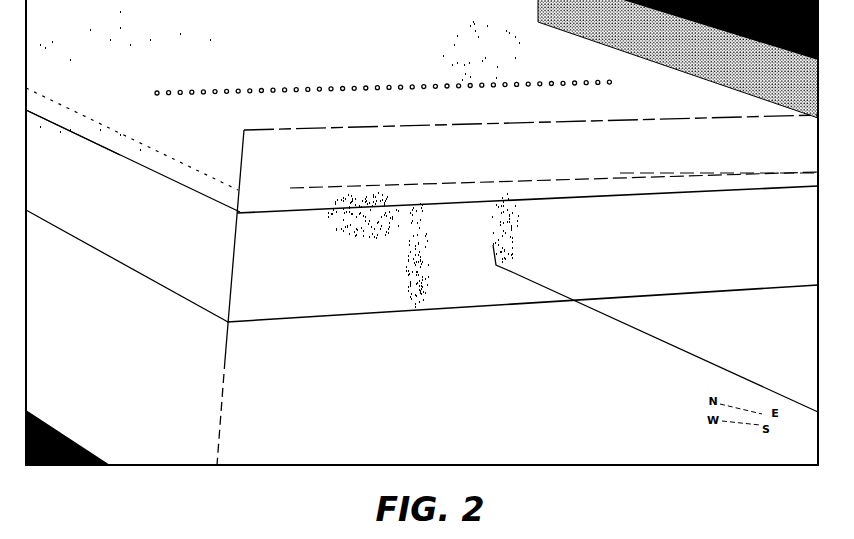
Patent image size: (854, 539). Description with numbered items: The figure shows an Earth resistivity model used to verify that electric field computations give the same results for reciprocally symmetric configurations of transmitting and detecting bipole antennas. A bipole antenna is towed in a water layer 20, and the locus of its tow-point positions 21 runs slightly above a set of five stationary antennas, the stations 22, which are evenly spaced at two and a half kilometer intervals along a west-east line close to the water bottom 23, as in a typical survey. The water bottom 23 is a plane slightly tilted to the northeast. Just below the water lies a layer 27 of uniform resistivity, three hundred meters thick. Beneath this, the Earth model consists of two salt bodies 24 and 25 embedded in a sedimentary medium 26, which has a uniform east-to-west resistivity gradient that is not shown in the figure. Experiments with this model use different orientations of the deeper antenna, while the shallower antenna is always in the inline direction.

The water layer 20 is at (752, 124).
The locus of tow-point positions 21 is at (432, 82).
The stations 22 is at (297, 100).
The water bottom 23 is at (140, 145).
The salt body 24 is at (404, 228).
The salt body 25 is at (510, 222).
The sedimentary medium 26 is at (268, 197).
The layer of uniform resistivity 27 is at (629, 150).